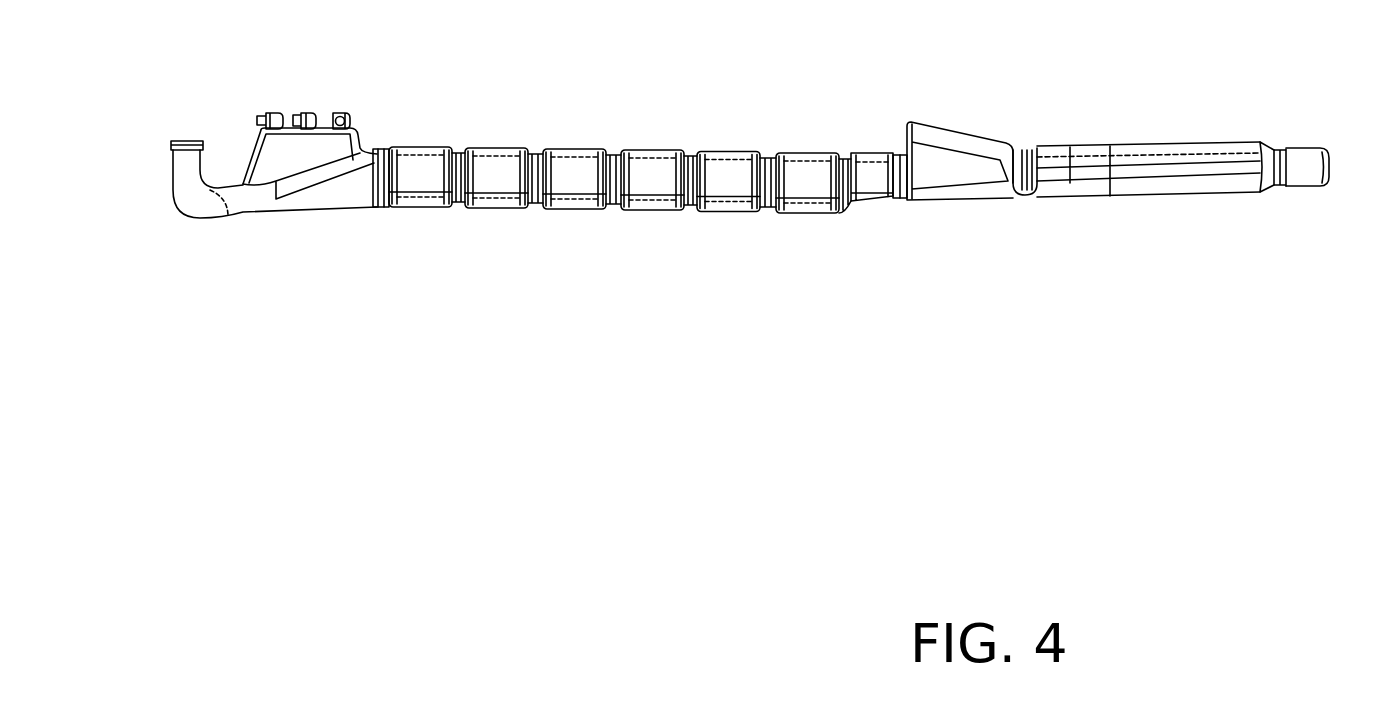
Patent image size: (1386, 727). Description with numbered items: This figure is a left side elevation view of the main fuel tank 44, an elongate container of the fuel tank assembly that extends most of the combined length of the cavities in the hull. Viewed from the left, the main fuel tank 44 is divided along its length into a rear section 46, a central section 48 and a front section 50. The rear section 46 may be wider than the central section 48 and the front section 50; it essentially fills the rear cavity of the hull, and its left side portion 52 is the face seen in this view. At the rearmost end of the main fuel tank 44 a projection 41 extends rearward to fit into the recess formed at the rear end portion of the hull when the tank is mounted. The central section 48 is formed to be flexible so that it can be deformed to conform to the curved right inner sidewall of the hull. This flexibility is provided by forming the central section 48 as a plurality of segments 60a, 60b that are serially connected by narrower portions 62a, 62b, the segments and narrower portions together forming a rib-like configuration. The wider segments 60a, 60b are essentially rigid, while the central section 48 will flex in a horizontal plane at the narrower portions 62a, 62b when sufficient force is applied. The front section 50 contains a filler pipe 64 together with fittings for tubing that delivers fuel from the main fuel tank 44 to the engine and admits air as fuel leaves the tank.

The projection 41 is at (1307, 188).
The main fuel tank 44 is at (700, 275).
The rear section 46 is at (1188, 193).
The central section 48 is at (636, 262).
The front section 50 is at (298, 210).
The left side portion 52 is at (1170, 158).
The segment 60a is at (812, 198).
The segment 60b is at (720, 172).
The narrower portion 62a is at (843, 153).
The narrower portion 62b is at (771, 152).
The filler pipe 64 is at (182, 167).